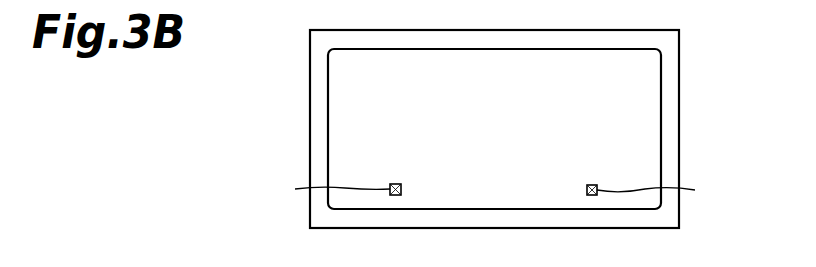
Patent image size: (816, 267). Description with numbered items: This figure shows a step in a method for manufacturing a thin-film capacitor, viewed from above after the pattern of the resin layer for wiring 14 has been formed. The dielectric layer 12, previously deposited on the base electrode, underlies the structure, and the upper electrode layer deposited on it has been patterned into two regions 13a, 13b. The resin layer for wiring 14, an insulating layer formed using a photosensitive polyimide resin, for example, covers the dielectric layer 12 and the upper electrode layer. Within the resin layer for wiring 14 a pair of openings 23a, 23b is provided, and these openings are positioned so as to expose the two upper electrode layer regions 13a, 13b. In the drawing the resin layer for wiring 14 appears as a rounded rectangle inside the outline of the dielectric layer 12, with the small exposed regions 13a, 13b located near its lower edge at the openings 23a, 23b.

The dielectric layer 12 is at (668, 143).
The resin layer for wiring 14 is at (627, 93).
The upper electrode layer region 13a is at (402, 190).
The upper electrode layer region 13b is at (586, 190).
The opening 23a is at (316, 191).
The opening 23b is at (671, 191).